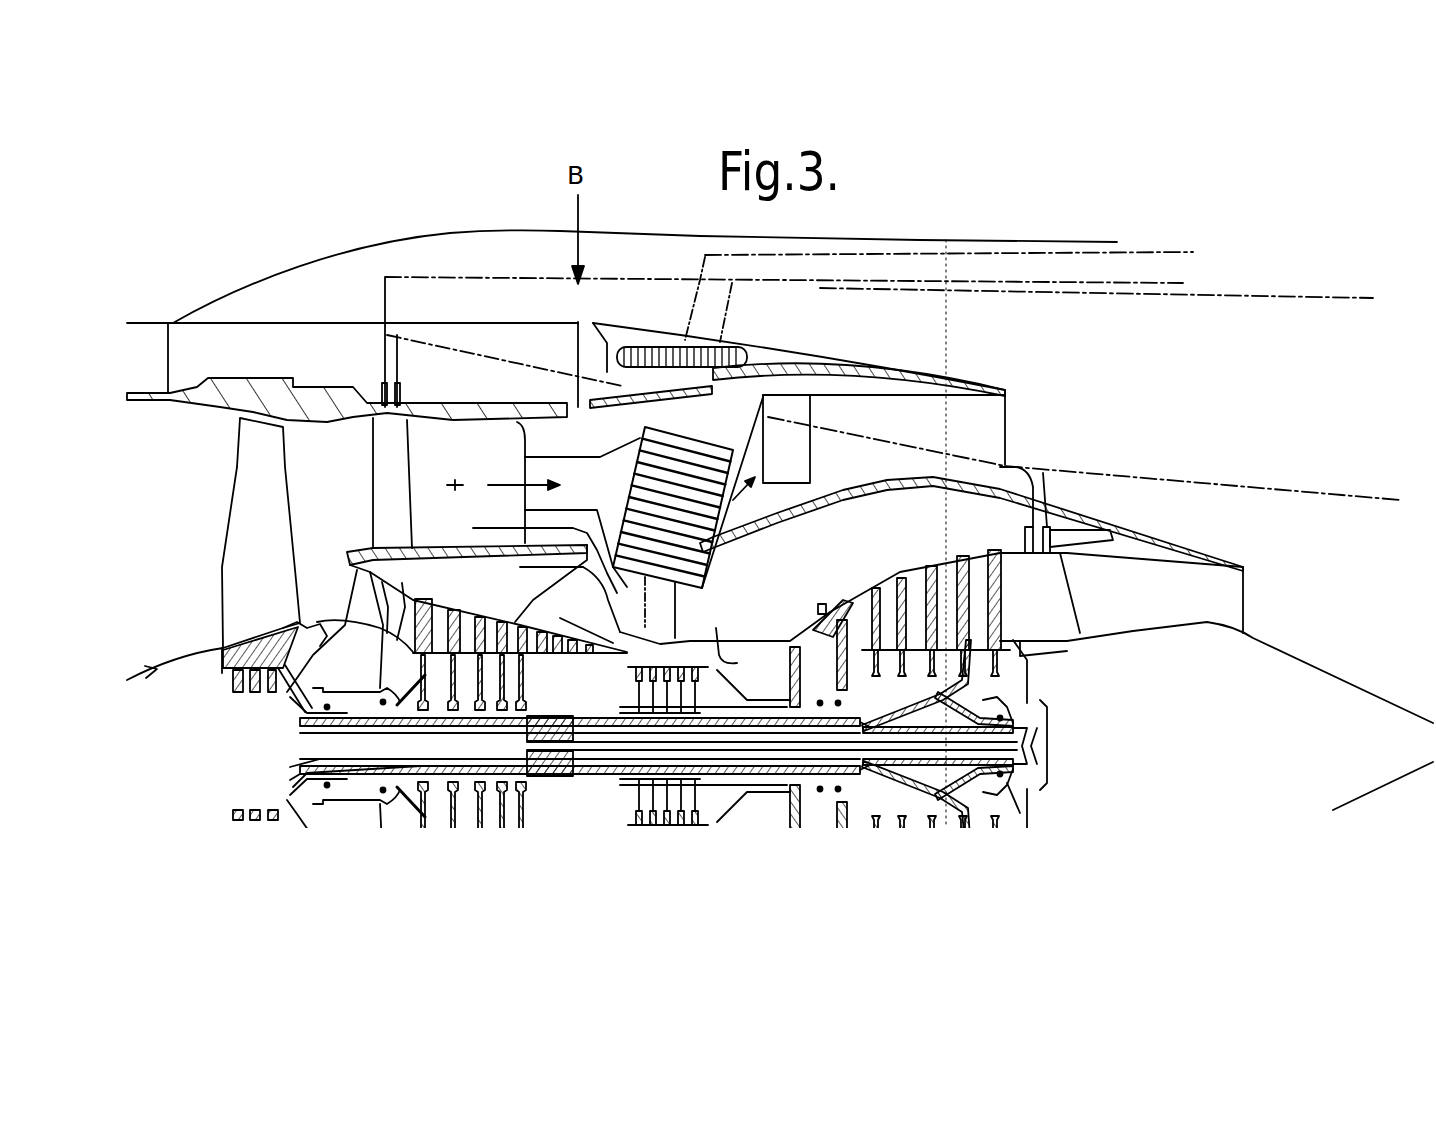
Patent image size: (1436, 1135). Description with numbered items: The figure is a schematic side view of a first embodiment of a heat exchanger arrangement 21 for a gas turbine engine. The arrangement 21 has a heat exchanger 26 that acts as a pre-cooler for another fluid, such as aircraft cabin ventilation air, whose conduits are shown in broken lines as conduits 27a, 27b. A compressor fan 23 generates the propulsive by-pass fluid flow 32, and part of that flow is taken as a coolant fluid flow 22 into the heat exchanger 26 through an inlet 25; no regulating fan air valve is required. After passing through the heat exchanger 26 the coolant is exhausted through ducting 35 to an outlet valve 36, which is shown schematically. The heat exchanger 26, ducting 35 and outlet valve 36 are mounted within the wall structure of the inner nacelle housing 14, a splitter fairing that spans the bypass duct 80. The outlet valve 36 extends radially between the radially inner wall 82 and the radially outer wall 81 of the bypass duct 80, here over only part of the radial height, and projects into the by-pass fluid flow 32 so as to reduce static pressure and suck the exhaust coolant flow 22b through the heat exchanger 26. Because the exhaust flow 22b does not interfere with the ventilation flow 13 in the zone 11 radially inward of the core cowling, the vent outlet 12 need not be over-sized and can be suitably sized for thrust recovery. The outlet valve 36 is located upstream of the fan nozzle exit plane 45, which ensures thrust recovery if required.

The ventilation zone 11 is at (840, 577).
The vent outlet 12 is at (1100, 503).
The ventilation flow 13 is at (632, 598).
The inner nacelle housing 14 is at (525, 437).
The heat exchanger arrangement 21 is at (653, 419).
The coolant fluid flow 22 is at (455, 487).
The exhaust coolant flow 22b is at (761, 535).
The compressor fan 23 is at (250, 473).
The inlet 25 is at (535, 483).
The heat exchanger 26 is at (637, 492).
The conduit 27a is at (658, 608).
The conduit 27b is at (887, 262).
The by-pass fluid flow 32 is at (358, 468).
The ducting 35 is at (748, 568).
The outlet valve 36 is at (790, 403).
The fan nozzle exit plane 45 is at (1008, 393).
The bypass duct 80 is at (900, 424).
The radially outer wall 81 is at (954, 386).
The radially inner wall 82 is at (880, 472).